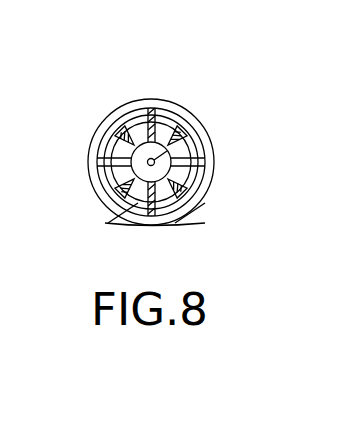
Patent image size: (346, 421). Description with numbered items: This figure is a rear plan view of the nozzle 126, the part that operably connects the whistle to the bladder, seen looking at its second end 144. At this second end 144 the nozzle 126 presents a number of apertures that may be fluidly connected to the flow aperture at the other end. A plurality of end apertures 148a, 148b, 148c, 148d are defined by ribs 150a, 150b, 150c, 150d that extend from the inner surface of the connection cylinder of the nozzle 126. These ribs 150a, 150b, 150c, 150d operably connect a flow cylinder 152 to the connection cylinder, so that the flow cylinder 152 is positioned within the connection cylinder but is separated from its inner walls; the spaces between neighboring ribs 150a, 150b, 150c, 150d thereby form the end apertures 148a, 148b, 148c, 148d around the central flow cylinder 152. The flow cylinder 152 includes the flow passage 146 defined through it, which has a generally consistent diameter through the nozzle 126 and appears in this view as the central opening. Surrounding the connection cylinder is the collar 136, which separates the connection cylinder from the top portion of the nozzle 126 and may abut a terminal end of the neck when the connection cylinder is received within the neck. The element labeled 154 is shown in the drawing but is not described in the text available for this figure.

The nozzle 126 is at (188, 88).
The collar 136 is at (178, 223).
The second end 144 is at (103, 201).
The flow passage 146 is at (208, 162).
The end aperture 148a is at (112, 134).
The end aperture 148b is at (208, 132).
The end aperture 148c is at (205, 202).
The end aperture 148d is at (130, 227).
The rib 150a is at (100, 170).
The rib 150b is at (151, 99).
The rib 150c is at (205, 184).
The rib 150d is at (152, 222).
The flow cylinder 152 is at (134, 112).
The base 154 is at (146, 239).